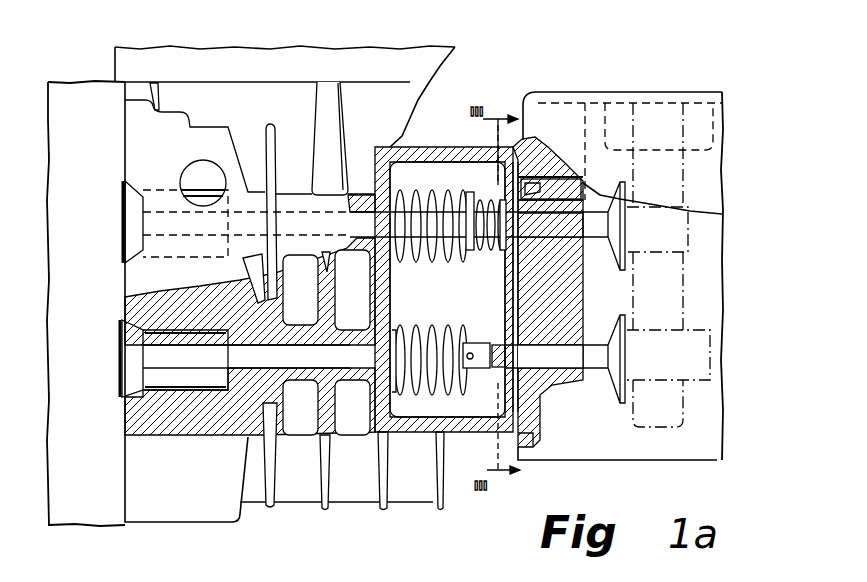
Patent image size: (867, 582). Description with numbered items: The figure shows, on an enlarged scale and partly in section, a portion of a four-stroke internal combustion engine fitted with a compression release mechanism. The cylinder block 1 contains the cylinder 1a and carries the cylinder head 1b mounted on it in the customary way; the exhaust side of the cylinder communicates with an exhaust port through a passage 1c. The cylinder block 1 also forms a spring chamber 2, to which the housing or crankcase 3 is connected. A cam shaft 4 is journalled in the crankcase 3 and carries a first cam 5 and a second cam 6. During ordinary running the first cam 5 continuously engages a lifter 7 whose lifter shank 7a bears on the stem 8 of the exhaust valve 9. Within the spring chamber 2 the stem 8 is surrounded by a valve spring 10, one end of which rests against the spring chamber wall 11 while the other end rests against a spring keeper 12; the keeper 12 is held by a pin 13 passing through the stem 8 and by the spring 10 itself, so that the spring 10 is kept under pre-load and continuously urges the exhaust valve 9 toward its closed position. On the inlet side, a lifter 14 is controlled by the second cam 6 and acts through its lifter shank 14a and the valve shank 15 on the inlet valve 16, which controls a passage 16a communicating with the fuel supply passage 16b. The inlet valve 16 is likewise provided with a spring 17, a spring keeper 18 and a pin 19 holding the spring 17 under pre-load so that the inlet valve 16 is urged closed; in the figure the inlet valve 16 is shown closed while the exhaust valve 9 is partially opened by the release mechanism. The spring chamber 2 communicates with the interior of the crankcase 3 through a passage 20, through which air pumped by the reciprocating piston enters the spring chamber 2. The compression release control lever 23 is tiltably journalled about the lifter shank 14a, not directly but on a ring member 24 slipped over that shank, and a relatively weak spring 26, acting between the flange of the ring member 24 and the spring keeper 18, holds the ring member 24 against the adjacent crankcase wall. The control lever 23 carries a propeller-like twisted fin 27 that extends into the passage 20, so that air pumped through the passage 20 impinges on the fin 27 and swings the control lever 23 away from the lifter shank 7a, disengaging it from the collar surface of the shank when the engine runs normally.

The cylinder block 1 is at (203, 527).
The cylinder 1a is at (350, 495).
The cylinder head 1b is at (93, 515).
The passage 1c is at (186, 382).
The spring chamber 2 is at (413, 145).
The housing or crankcase 3 is at (598, 452).
The cam shaft 4 is at (700, 408).
The first cam 5 is at (700, 360).
The second cam 6 is at (700, 234).
The lifter 7 is at (608, 385).
The lifter shank 7a is at (590, 352).
The valve stem 8 is at (478, 350).
The exhaust valve 9 is at (128, 372).
The valve spring 10 is at (444, 326).
The spring chamber wall 11 is at (400, 306).
The spring keeper 12 is at (468, 384).
The pin 13 is at (474, 330).
The lifter 14 is at (615, 252).
The lifter shank 14a is at (596, 218).
The valve shank 15 is at (432, 190).
The inlet valve 16 is at (137, 228).
The passage 16a is at (165, 247).
The fuel supply passage 16b is at (200, 170).
The spring 17 is at (450, 190).
The spring keeper 18 is at (470, 192).
The pin 19 is at (476, 215).
The passage 20 is at (562, 150).
The compression release control lever 23 is at (519, 160).
The ring member 24 is at (500, 243).
The spring 26 is at (496, 250).
The fin 27 is at (550, 150).